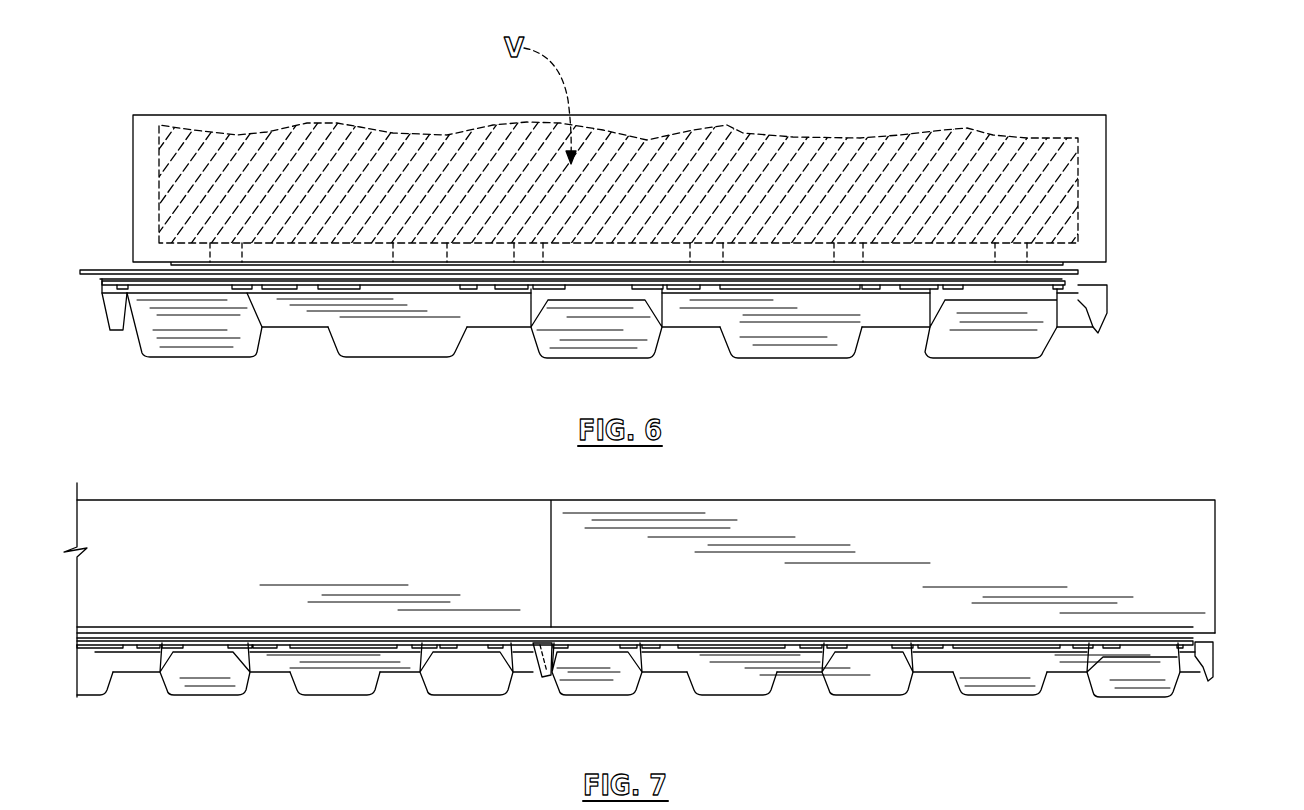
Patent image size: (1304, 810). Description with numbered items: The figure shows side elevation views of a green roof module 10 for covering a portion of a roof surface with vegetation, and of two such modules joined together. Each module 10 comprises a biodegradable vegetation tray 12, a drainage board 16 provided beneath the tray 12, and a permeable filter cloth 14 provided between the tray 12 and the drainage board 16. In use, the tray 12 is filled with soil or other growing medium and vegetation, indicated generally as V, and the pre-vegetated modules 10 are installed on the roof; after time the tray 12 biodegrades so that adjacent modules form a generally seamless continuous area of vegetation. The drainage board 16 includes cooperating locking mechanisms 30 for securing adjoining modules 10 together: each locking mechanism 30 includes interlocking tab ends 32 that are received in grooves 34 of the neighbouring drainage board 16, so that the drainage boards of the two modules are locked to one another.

In FIG. 6, the module 10 is at (1068, 103).
In FIG. 6, the biodegradable vegetation tray 12 is at (1100, 176).
In FIG. 6, the filter cloth 14 is at (97, 263).
In FIG. 6, the drainage board 16 is at (110, 283).
In FIG. 6, the locking mechanism 30 is at (93, 344).
In FIG. 7, the locking mechanism 30 is at (533, 680).
In FIG. 6, the tab end 32 is at (1090, 318).
In FIG. 7, the tab end 32 is at (1210, 660).
In FIG. 6, the groove 34 is at (123, 313).